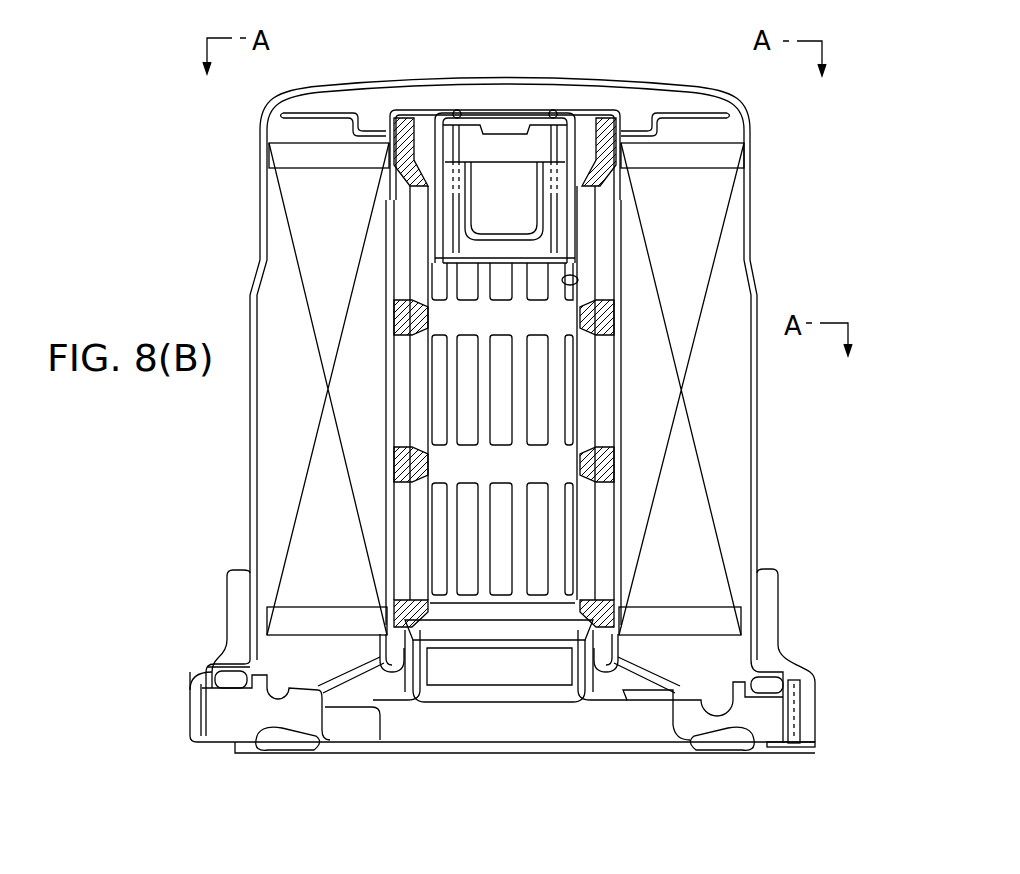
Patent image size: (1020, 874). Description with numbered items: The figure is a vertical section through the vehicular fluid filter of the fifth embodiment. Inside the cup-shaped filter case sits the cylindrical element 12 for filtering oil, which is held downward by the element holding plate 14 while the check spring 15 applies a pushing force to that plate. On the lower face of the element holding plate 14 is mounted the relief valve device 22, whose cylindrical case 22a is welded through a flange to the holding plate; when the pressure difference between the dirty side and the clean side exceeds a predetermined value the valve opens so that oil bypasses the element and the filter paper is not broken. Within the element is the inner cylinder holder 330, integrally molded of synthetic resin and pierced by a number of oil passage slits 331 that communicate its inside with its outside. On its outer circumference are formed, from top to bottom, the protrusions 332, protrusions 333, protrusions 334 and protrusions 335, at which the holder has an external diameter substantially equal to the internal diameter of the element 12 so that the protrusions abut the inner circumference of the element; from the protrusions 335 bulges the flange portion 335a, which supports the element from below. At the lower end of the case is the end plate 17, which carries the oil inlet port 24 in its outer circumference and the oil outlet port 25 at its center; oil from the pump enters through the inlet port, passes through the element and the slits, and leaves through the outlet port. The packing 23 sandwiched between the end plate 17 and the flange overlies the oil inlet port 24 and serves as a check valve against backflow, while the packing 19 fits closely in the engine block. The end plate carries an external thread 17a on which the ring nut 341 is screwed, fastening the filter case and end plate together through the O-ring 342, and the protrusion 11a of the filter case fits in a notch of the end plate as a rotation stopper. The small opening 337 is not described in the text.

The protrusion 11a is at (787, 706).
The element 12 is at (722, 300).
The element holding plate 14 is at (432, 110).
The check spring 15 is at (680, 106).
The end plate 17 is at (596, 697).
The external thread 17a is at (200, 713).
The packing 19 is at (737, 745).
The relief valve device 22 is at (491, 221).
The cylindrical case 22a is at (452, 268).
The packing 23 is at (385, 676).
The oil inlet port 24 is at (650, 697).
The oil outlet port 25 is at (523, 675).
The inner cylinder holder 330 is at (390, 405).
The oil passage slits 331 is at (542, 393).
The protrusions 332 is at (608, 125).
The protrusions 333 is at (615, 298).
The protrusions 334 is at (615, 463).
The protrusions 335 is at (607, 598).
The flange portion 335a is at (653, 651).
The drain hole 337 is at (575, 281).
The ring nut 341 is at (818, 680).
The O-ring 342 is at (231, 676).